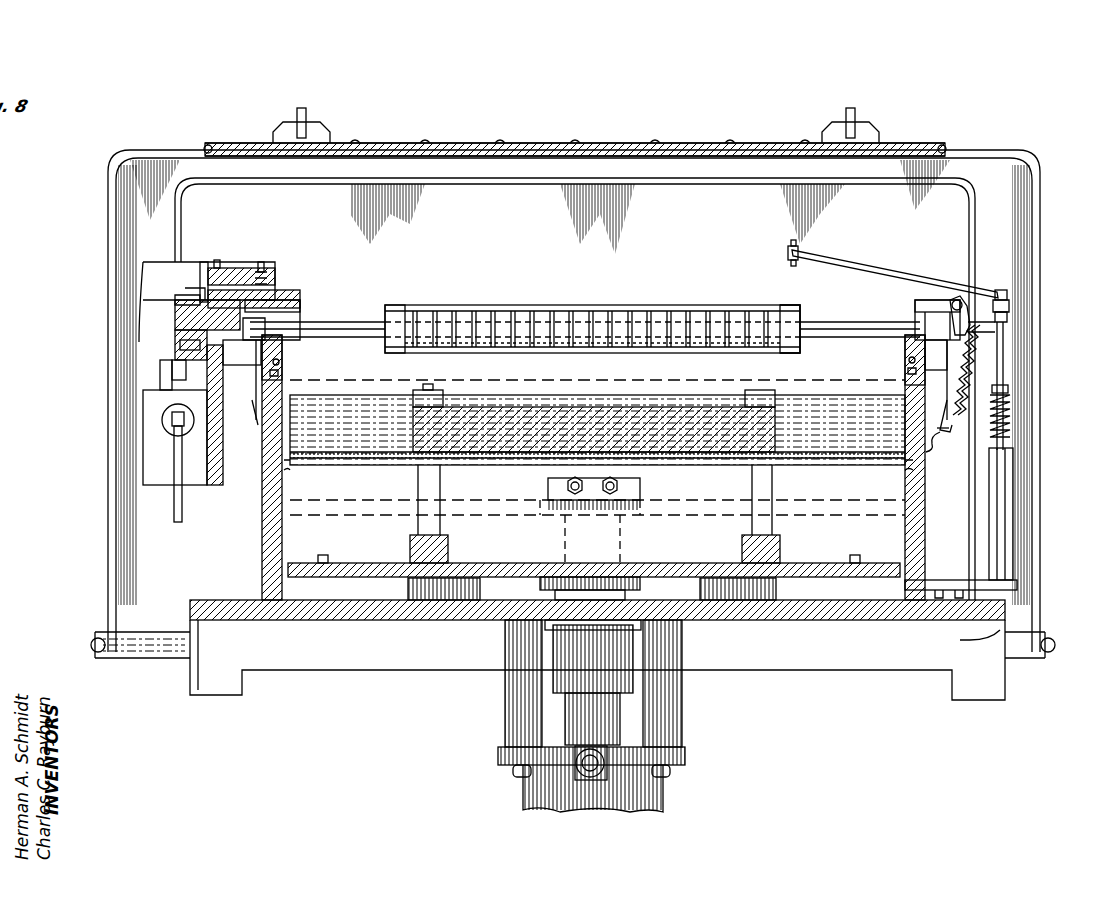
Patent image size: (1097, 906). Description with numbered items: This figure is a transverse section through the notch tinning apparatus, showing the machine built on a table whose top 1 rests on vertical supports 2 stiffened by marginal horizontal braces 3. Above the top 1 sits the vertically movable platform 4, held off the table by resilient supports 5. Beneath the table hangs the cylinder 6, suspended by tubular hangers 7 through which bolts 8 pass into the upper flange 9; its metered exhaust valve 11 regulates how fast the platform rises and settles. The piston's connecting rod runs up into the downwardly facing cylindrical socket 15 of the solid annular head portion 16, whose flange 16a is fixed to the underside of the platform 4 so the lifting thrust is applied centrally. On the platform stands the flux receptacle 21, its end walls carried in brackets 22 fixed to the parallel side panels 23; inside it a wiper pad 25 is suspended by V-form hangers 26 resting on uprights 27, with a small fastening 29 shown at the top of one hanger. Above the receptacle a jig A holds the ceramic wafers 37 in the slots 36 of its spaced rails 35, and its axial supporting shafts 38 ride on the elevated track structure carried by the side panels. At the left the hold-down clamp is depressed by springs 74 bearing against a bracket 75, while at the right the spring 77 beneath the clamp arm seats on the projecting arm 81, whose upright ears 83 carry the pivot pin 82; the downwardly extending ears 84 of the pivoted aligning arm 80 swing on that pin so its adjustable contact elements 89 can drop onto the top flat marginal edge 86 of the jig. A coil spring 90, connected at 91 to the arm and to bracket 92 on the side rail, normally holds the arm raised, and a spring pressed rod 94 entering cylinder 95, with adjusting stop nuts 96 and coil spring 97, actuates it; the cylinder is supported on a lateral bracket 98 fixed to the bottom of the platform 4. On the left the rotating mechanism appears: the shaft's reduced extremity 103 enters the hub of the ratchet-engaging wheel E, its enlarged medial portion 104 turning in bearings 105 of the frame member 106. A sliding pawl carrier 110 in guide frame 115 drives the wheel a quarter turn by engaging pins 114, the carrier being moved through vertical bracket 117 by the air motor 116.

The table top 1 is at (226, 598).
The vertical supports 2 is at (952, 688).
The marginal horizontal braces 3 is at (187, 660).
The vertically movable platform 4 is at (299, 563).
The resilient supports 5 is at (436, 600).
The cylinder 6 is at (663, 803).
The tubular hangers 7 is at (505, 712).
The bolts 8 is at (519, 771).
The upper flange 9 is at (685, 752).
The metered exhaust valve 11 is at (608, 766).
The cylindrical socket 15 is at (555, 680).
The annular head portion 16 is at (600, 588).
The flange 16a is at (650, 588).
The flux receptacle 21 is at (516, 465).
The brackets 22 is at (896, 466).
The side panels 23 is at (938, 510).
The wiper pad 25 is at (546, 408).
The hangers 26 is at (412, 396).
The uprights 27 is at (725, 490).
The pin 29 is at (431, 384).
The rails 35 is at (670, 315).
The slots 36 is at (720, 316).
The ceramic wafers 37 is at (616, 315).
The supporting shafts 38 is at (366, 320).
The springs 74 is at (278, 272).
The bracket 75 is at (246, 269).
The spring 77 is at (1011, 326).
The pivoted aligning arm 80 is at (924, 410).
The projecting arm 81 is at (999, 339).
The pivot pin 82 is at (964, 304).
The upright ears 83 is at (1009, 333).
The downwardly extending ears 84 is at (964, 294).
The top flat marginal edge 86 is at (793, 307).
The adjustable contact elements 89 is at (788, 260).
The coil spring 90 is at (992, 364).
The spring connection 91 is at (1011, 295).
The bracket 92 is at (933, 446).
The spring pressed rod 94 is at (1004, 382).
The cylinder 95 is at (1006, 500).
The adjusting stop nuts 96 is at (1008, 396).
The coil spring 97 is at (1004, 426).
The lateral bracket 98 is at (1014, 588).
The reduced extremity 103 is at (181, 312).
The enlarged medial portion 104 is at (181, 348).
The bearings 105 is at (206, 264).
The frame member 106 is at (215, 485).
The sliding pawl carrier 110 is at (181, 379).
The pins 114 is at (186, 289).
The guide frame 115 is at (181, 406).
The air motor 116 is at (155, 428).
The vertical bracket 117 is at (186, 364).
The jigs A is at (592, 321).
The ratchet-engaging wheel E is at (165, 307).